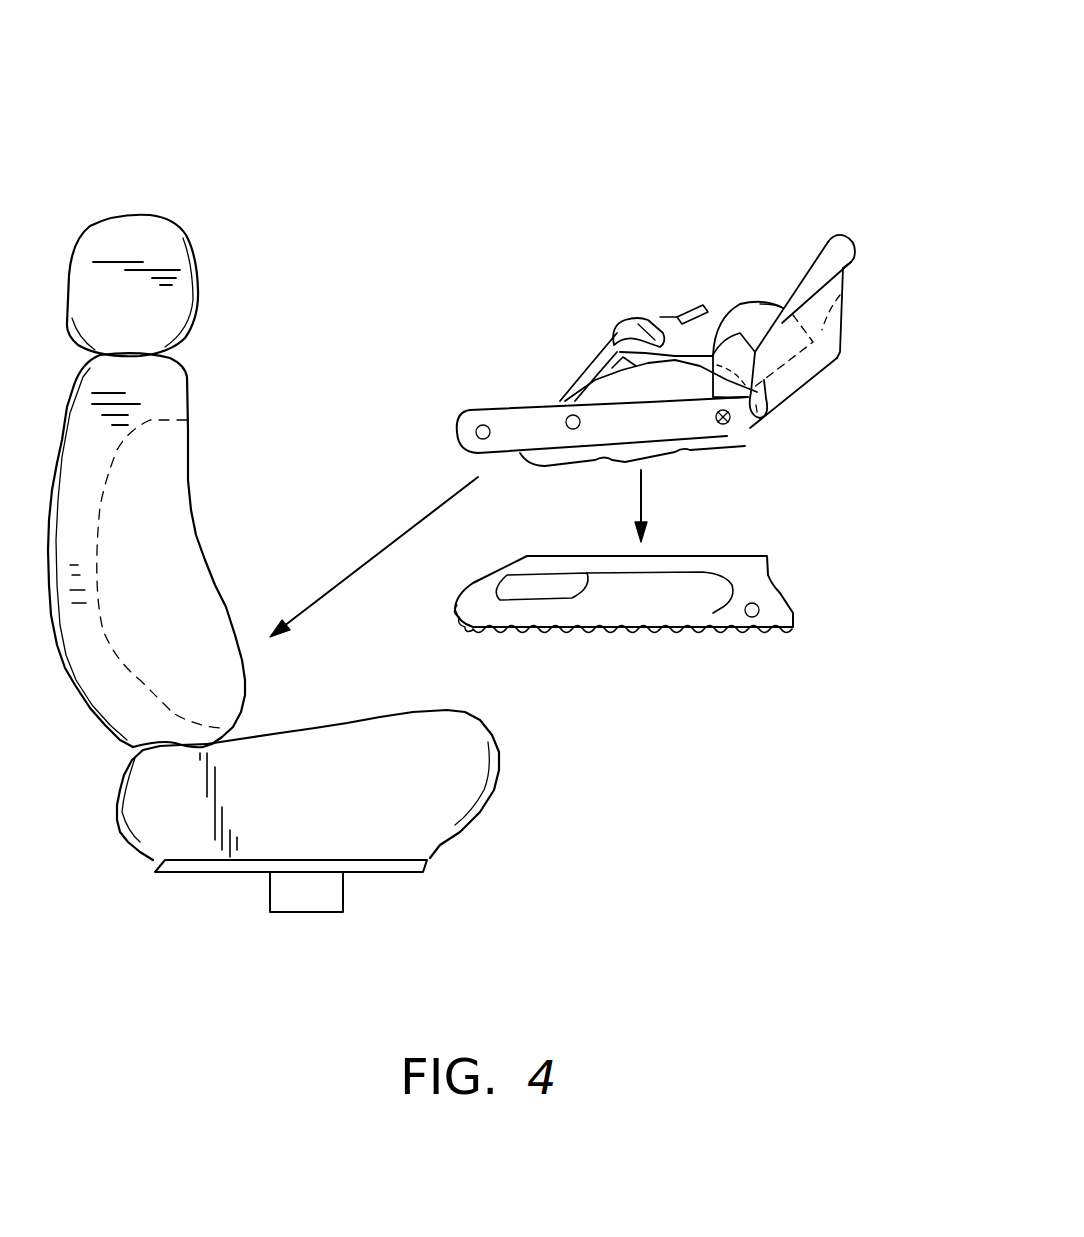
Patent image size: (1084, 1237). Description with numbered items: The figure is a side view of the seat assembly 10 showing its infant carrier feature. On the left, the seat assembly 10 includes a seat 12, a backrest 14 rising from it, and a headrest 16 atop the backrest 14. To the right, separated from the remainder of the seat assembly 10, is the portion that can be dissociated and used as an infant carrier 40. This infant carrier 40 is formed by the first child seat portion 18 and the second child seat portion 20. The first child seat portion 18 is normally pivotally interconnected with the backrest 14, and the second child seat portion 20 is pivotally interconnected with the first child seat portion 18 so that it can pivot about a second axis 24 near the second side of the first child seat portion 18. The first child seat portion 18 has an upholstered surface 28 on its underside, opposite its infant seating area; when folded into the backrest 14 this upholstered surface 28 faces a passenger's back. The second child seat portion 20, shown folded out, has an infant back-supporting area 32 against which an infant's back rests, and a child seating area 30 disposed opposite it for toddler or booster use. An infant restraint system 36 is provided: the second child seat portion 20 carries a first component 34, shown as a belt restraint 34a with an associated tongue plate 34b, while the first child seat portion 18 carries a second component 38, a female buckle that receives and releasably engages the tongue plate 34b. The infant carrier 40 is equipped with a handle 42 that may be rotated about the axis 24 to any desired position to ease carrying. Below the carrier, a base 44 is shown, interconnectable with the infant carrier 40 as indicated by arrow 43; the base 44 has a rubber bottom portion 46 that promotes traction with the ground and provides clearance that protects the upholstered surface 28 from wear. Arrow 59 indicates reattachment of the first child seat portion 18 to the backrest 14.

The seat assembly 10 is at (623, 93).
The seat 12 is at (500, 740).
The backrest 14 is at (190, 392).
The headrest 16 is at (185, 228).
The first child seat portion 18 is at (526, 428).
The second child seat portion 20 is at (852, 276).
The second axis 24 is at (728, 424).
The upholstered surface 28 is at (558, 467).
The child seating area 30 is at (840, 356).
The infant back-supporting area 32 is at (850, 290).
The first component of infant restraint system 34 is at (722, 290).
The belt restraint 34a is at (740, 287).
The tongue plate 34b is at (675, 316).
The infant restraint system 36 is at (650, 294).
The second component of infant restraint system 38 is at (625, 322).
The infant carrier 40 is at (620, 220).
The handle 42 is at (828, 238).
The arrow 43 is at (645, 497).
The base 44 is at (772, 585).
The rubber bottom portion 46 is at (715, 638).
The arrow 59 is at (368, 556).